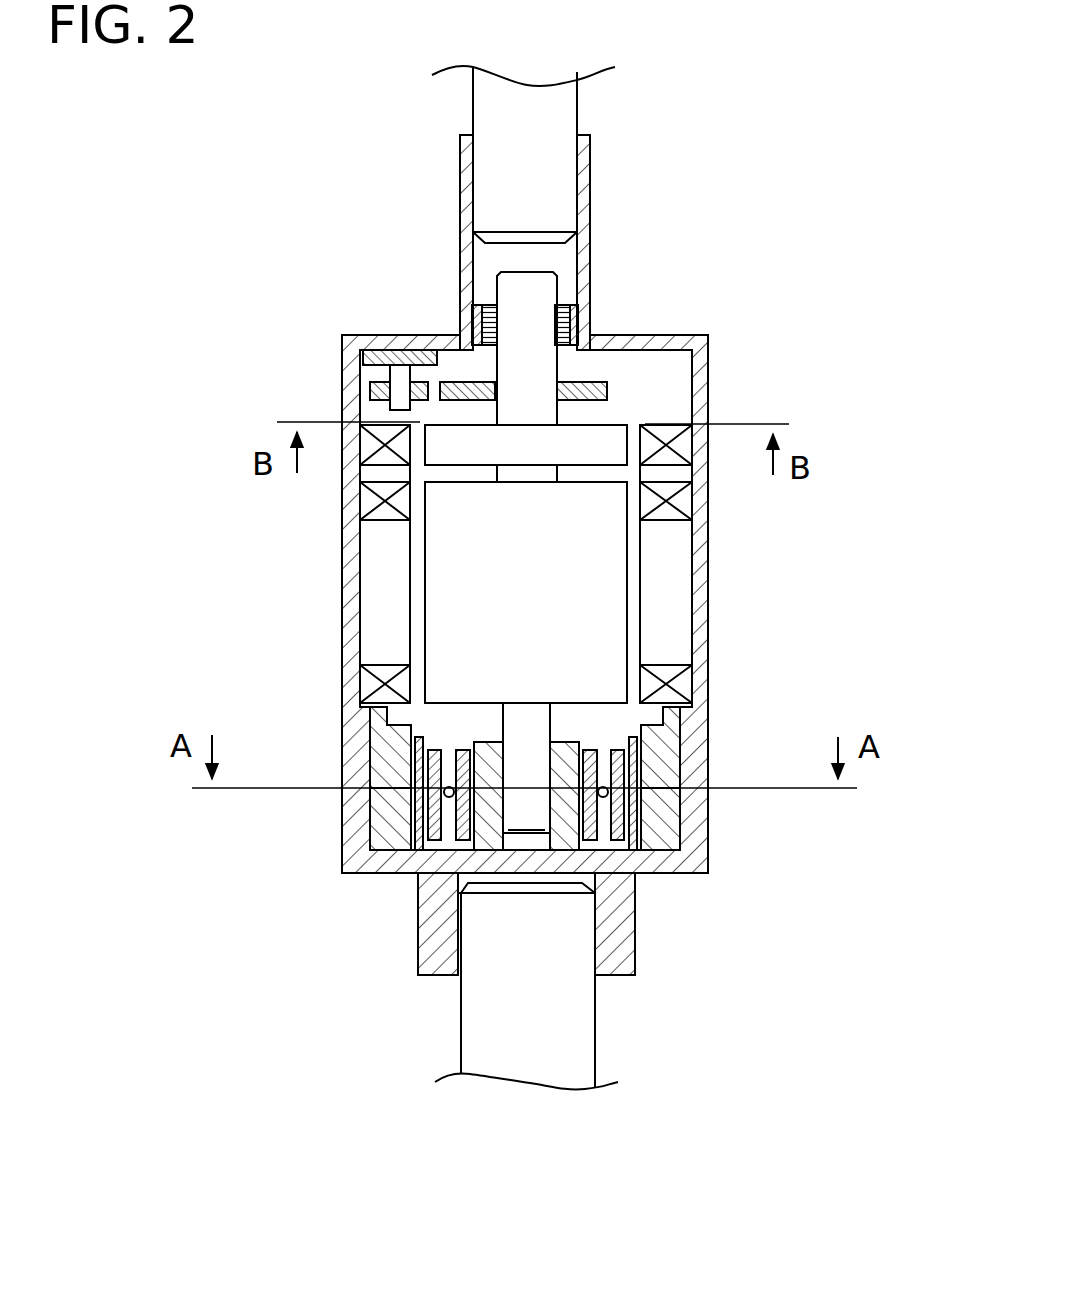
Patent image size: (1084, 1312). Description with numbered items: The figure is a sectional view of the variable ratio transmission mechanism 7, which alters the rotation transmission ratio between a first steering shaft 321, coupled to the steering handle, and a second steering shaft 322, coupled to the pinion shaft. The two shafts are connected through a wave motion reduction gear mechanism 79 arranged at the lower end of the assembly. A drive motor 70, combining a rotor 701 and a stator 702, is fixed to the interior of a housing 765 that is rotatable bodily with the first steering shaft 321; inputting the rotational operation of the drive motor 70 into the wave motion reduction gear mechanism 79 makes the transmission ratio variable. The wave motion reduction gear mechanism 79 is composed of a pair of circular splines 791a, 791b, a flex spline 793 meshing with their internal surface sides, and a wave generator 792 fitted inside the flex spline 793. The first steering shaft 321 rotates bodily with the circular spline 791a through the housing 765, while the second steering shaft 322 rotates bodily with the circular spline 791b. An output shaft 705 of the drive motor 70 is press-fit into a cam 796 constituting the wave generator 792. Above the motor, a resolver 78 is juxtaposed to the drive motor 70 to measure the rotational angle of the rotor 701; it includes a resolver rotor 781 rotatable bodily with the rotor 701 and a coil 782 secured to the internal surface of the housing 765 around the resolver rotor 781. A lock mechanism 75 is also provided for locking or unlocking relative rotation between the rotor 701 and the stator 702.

The variable ratio transmission mechanism 7 is at (725, 207).
The first steering shaft 321 is at (523, 188).
The second steering shaft 322 is at (531, 1032).
The drive motor 70 is at (348, 546).
The housing 765 is at (350, 643).
The lock mechanism 75 is at (349, 390).
The resolver 78 is at (699, 454).
The coil 782 is at (667, 430).
The stator 702 is at (667, 583).
The rotor 701 is at (450, 607).
The resolver rotor 781 is at (463, 445).
The wave motion reduction gear mechanism 79 is at (358, 821).
The circular spline 791a is at (663, 745).
The circular spline 791b is at (660, 823).
The flex spline 793 is at (640, 830).
The wave generator 792 is at (419, 830).
The cam 796 is at (597, 827).
The output shaft 705 is at (522, 792).